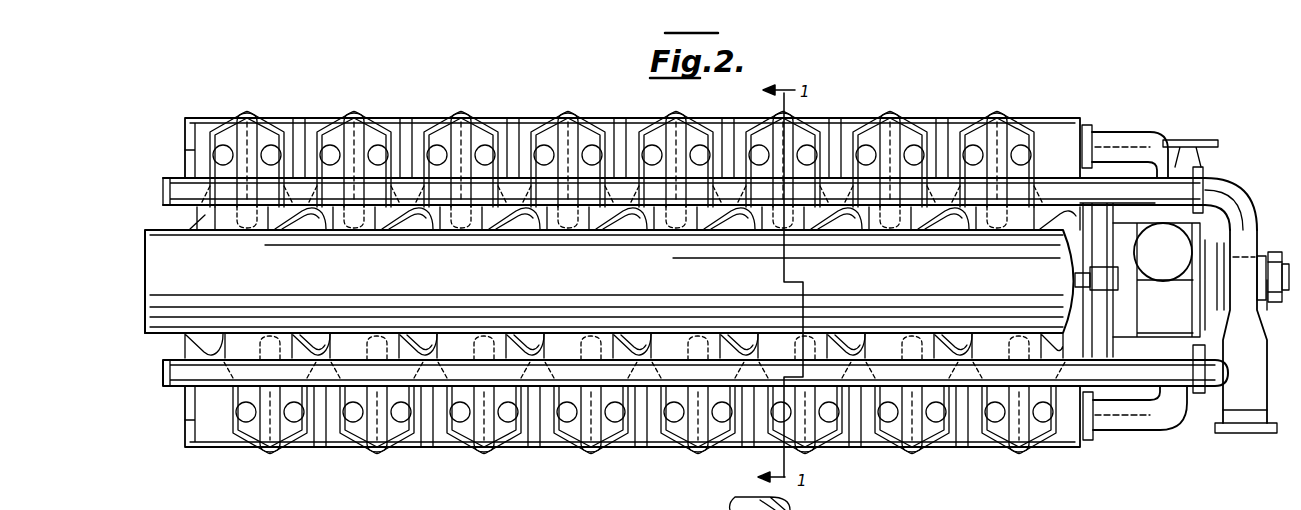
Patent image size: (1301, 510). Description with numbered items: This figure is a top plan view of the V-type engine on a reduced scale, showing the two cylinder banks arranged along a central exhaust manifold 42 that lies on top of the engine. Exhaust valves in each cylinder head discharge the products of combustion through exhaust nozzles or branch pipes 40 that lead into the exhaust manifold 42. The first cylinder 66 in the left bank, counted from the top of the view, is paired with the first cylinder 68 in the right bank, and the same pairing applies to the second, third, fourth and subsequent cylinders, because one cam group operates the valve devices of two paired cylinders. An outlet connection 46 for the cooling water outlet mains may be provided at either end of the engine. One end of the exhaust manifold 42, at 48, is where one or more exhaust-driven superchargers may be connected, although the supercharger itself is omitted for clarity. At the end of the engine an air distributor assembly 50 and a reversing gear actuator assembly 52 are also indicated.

The exhaust nozzles or branch pipes 40 is at (518, 223).
The exhaust manifold 42 is at (202, 303).
The outlet connection 46 is at (1240, 420).
The end of the exhaust manifold 48 is at (146, 258).
The air distributor assembly 50 is at (1280, 267).
The reversing gear actuator assembly 52 is at (1180, 247).
The first cylinder in the left bank 66 is at (1017, 133).
The first cylinder in the right bank 68 is at (1047, 433).